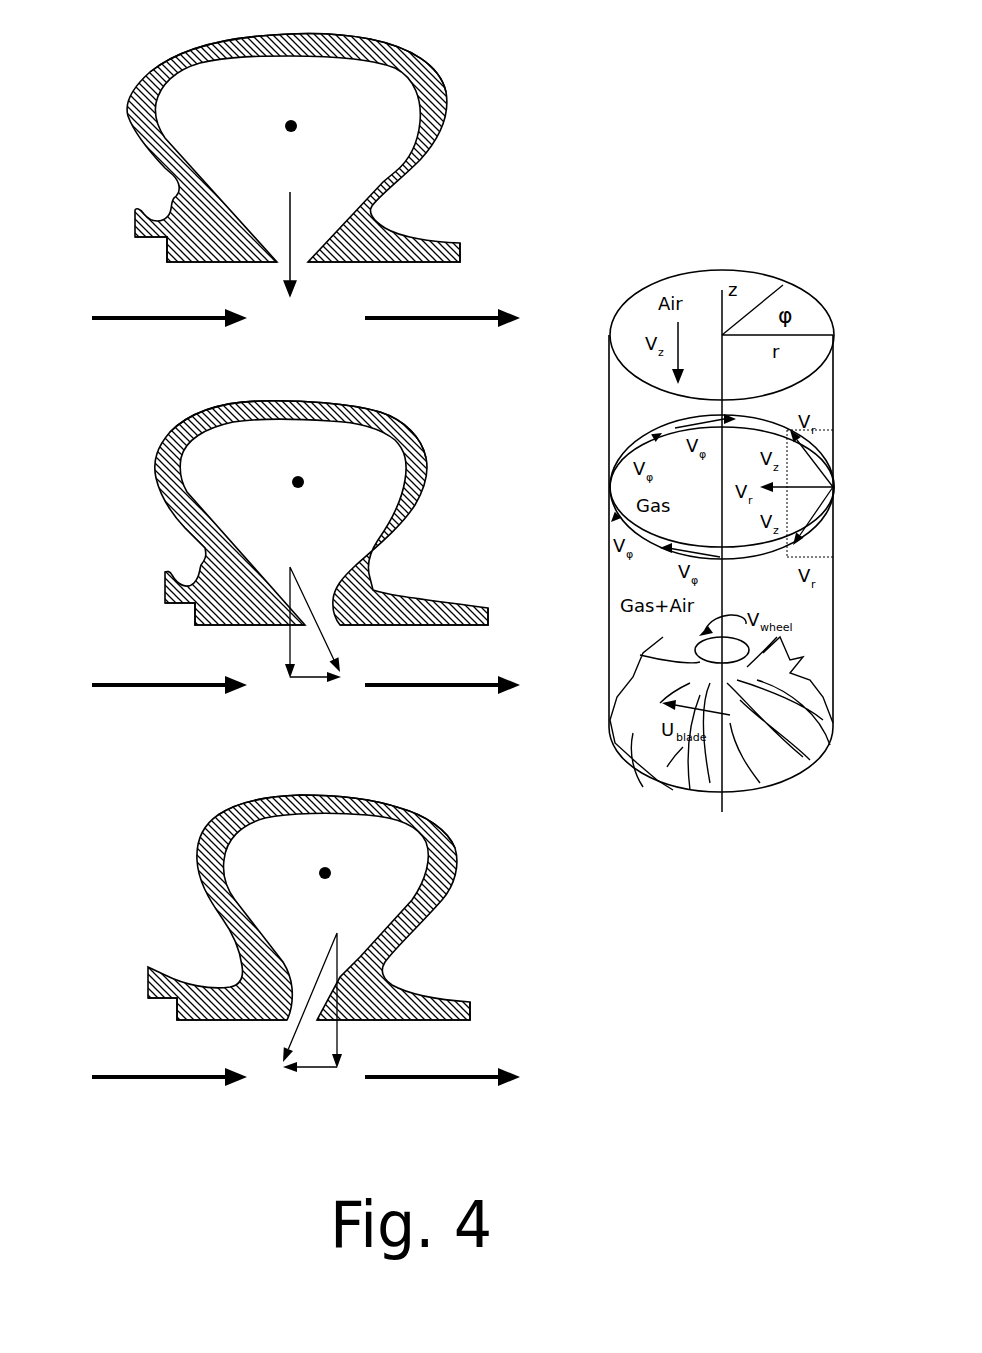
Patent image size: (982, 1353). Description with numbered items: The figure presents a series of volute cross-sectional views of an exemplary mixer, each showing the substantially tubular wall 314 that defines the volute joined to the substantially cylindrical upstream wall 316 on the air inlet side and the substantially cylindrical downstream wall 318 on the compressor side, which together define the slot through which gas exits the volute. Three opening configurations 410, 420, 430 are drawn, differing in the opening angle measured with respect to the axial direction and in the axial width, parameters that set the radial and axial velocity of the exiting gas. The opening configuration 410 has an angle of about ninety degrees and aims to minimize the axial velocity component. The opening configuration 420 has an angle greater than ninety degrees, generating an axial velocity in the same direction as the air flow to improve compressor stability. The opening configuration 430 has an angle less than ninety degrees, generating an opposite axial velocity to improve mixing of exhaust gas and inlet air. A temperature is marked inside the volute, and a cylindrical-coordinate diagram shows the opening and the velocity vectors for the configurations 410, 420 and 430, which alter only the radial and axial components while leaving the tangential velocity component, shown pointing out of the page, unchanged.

The tubular wall 314 is at (358, 40).
The upstream wall 316 is at (197, 263).
The downstream wall 318 is at (435, 263).
The opening configuration 410 is at (535, 34).
The opening configuration 420 is at (502, 403).
The opening configuration 430 is at (519, 788).